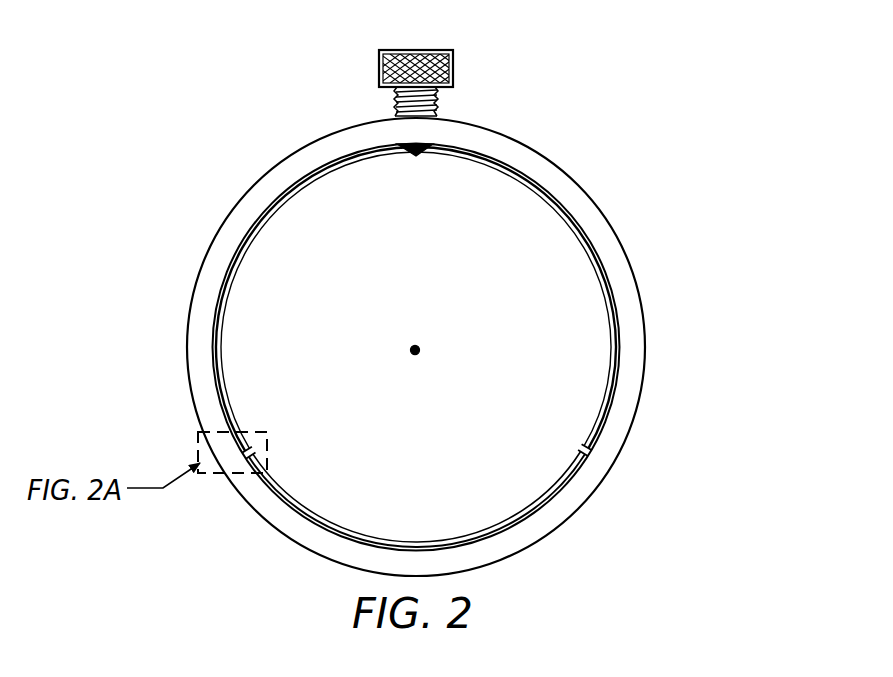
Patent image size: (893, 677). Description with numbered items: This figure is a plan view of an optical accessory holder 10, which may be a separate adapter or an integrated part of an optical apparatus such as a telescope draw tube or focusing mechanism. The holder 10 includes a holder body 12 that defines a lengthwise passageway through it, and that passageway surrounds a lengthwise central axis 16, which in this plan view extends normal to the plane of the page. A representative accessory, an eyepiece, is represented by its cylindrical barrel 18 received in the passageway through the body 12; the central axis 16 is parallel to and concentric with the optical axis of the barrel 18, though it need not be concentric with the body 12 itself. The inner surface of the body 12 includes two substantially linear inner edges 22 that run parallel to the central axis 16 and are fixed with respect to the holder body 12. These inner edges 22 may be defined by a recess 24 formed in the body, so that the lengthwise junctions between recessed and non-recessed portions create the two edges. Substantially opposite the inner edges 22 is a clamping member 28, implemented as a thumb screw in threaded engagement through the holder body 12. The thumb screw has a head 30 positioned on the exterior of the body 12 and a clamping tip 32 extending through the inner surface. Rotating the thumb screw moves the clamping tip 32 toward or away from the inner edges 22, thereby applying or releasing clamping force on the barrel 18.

The optical accessory holder 10 is at (167, 212).
The holder body 12 is at (318, 141).
The lengthwise central axis 16 is at (418, 348).
The barrel 18 is at (522, 178).
The inner edges 22 is at (248, 449).
The recess 24 is at (577, 470).
The clamping member 28 is at (426, 78).
The head 30 is at (378, 68).
The clamping tip 32 is at (416, 157).